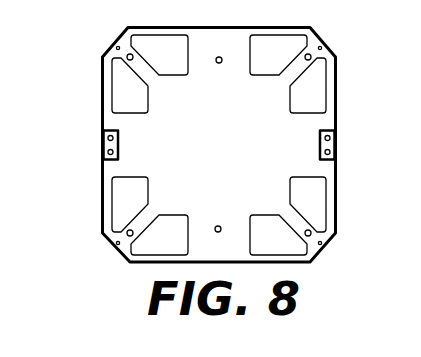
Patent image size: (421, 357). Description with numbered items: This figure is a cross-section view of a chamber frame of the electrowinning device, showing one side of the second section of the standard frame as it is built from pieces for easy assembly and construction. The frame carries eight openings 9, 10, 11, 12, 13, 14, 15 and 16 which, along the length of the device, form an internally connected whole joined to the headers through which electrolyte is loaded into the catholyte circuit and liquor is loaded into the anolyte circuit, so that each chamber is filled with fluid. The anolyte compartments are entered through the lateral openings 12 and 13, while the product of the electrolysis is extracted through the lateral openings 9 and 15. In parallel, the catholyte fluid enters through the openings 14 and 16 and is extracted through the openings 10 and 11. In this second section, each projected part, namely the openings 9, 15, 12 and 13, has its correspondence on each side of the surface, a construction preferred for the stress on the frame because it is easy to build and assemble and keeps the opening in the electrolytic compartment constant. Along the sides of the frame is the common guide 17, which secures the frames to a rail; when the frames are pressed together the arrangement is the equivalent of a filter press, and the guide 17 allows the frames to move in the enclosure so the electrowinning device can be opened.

The opening 9 is at (128, 83).
The opening 10 is at (120, 49).
The opening 11 is at (320, 47).
The opening 12 is at (310, 82).
The opening 13 is at (310, 203).
The opening 14 is at (299, 231).
The opening 15 is at (126, 203).
The opening 16 is at (157, 233).
The common guide 17 is at (104, 140).